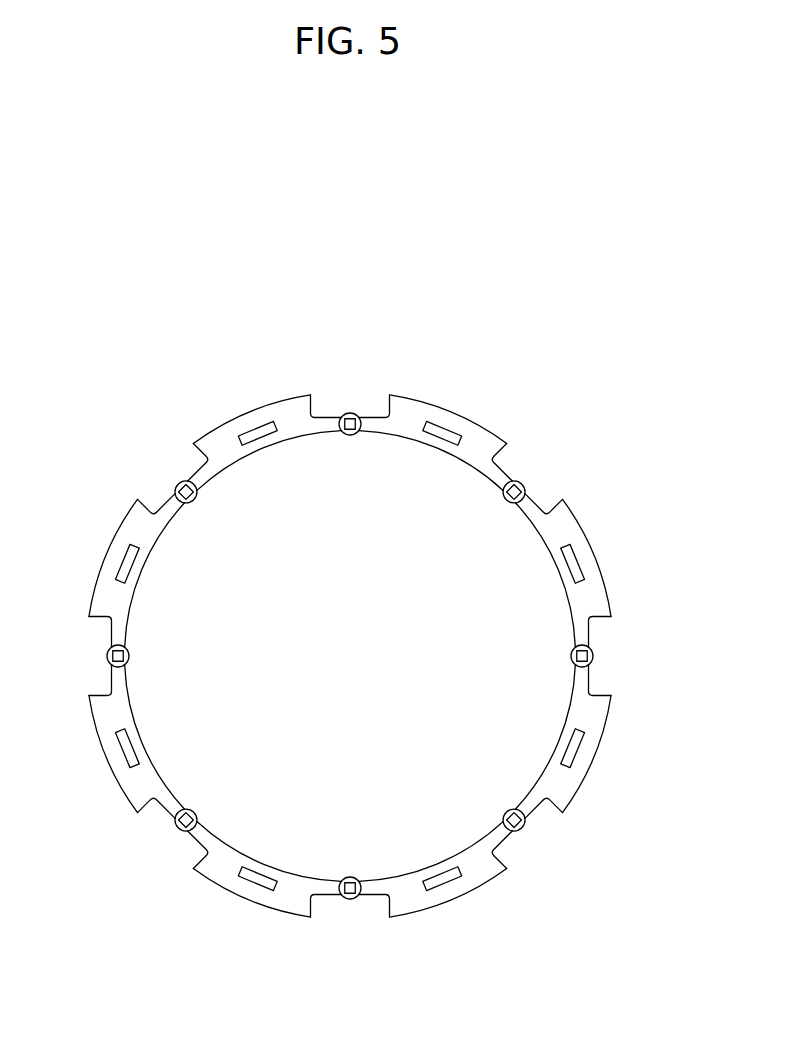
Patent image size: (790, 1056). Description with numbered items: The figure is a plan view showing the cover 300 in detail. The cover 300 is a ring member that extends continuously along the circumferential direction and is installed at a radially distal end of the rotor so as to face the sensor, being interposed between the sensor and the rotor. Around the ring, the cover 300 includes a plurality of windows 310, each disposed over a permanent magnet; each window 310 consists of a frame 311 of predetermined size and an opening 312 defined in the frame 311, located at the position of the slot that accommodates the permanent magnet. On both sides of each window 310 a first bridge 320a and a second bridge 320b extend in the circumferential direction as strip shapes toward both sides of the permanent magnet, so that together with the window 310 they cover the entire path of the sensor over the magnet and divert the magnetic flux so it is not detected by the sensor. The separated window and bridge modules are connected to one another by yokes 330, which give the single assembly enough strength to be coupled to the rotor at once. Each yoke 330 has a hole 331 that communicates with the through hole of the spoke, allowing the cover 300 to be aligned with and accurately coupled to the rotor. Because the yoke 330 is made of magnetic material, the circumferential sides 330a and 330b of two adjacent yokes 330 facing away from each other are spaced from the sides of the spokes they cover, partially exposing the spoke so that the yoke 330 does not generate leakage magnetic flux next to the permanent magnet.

The cover 300 is at (382, 611).
The window 310 is at (507, 389).
The frame 311 is at (515, 490).
The opening 312 is at (522, 488).
The first bridge 320a is at (165, 508).
The second bridge 320b is at (201, 470).
The yoke 330 is at (411, 410).
The side of yoke 330a is at (600, 697).
The side of yoke 330b is at (548, 800).
The hole 331 is at (257, 432).